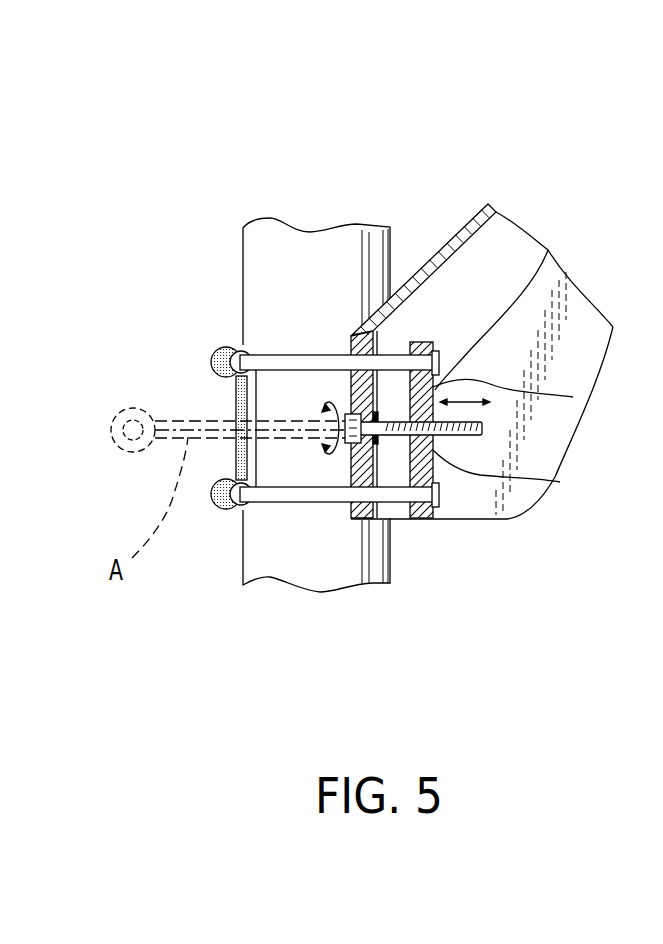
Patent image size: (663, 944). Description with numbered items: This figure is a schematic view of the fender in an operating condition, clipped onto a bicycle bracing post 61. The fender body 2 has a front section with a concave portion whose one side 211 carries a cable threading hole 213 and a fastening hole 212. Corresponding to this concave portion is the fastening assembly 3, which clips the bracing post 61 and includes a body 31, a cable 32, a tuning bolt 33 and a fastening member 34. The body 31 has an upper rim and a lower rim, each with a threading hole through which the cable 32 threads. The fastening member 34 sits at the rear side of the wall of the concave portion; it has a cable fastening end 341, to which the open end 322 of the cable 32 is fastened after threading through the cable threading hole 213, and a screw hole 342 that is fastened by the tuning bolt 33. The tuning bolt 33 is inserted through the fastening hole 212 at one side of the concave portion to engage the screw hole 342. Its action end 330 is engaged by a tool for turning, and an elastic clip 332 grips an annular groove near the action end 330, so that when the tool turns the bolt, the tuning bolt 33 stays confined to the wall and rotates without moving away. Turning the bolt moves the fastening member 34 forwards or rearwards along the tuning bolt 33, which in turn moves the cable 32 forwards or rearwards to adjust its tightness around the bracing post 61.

The fender body 2 is at (466, 208).
The fastening assembly 3 is at (297, 408).
The body 31 is at (240, 403).
The cable 32 is at (298, 357).
The tuning bolt 33 is at (397, 437).
The fastening member 34 is at (573, 397).
The bracing post 61 is at (243, 285).
The side 211 is at (350, 400).
The fastening hole 212 is at (352, 356).
The cable threading hole 213 is at (365, 323).
The open end 322 is at (530, 252).
The action end 330 is at (370, 445).
The elastic clip 332 is at (378, 445).
The cable fastening end 341 is at (422, 342).
The screw hole 342 is at (560, 482).